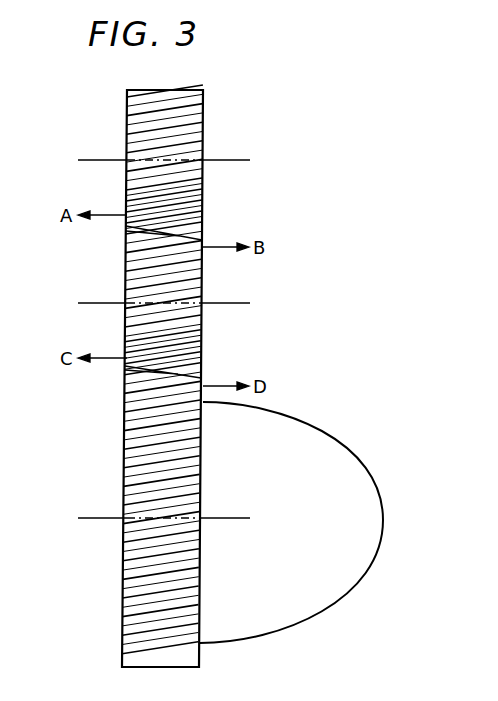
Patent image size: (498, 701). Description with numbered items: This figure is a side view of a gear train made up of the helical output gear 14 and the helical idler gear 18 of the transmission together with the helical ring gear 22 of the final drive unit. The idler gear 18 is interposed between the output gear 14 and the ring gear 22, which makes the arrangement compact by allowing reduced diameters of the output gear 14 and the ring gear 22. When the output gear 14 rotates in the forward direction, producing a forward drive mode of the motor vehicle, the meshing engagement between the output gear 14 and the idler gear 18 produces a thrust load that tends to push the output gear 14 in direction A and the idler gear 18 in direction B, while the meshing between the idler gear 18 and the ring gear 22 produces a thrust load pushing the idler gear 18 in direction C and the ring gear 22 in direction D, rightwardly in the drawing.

The output gear 14 is at (125, 140).
The idler gear 18 is at (127, 318).
The ring gear 22 is at (124, 556).